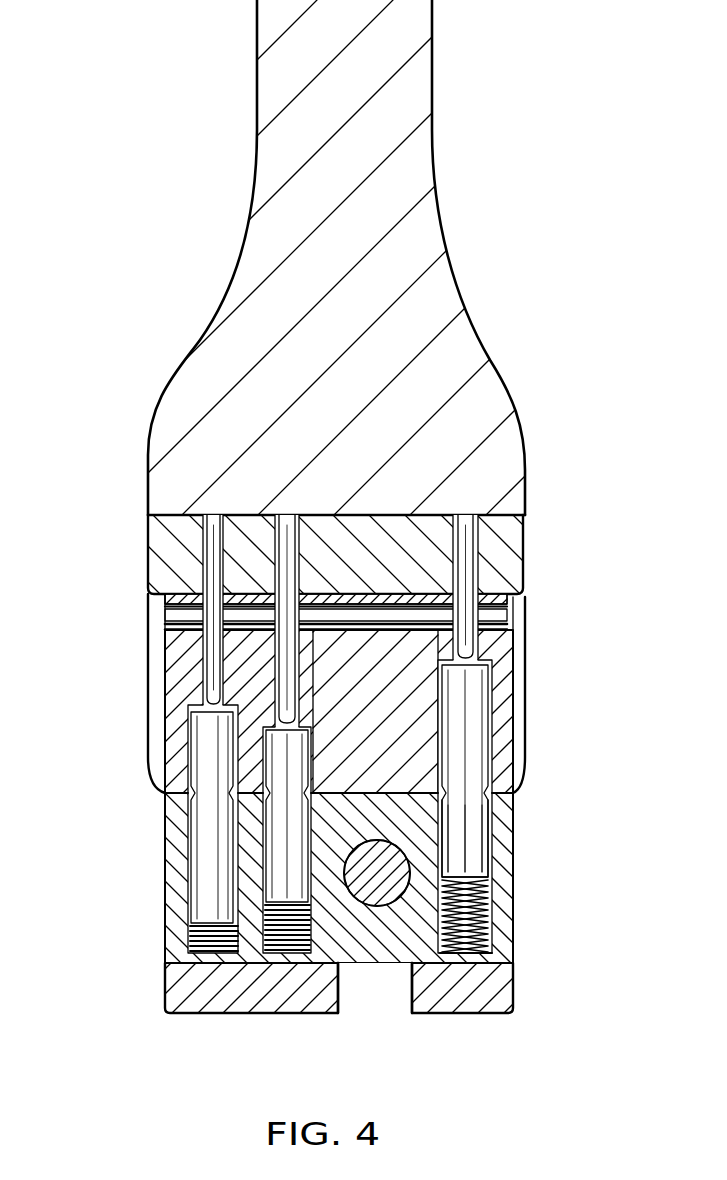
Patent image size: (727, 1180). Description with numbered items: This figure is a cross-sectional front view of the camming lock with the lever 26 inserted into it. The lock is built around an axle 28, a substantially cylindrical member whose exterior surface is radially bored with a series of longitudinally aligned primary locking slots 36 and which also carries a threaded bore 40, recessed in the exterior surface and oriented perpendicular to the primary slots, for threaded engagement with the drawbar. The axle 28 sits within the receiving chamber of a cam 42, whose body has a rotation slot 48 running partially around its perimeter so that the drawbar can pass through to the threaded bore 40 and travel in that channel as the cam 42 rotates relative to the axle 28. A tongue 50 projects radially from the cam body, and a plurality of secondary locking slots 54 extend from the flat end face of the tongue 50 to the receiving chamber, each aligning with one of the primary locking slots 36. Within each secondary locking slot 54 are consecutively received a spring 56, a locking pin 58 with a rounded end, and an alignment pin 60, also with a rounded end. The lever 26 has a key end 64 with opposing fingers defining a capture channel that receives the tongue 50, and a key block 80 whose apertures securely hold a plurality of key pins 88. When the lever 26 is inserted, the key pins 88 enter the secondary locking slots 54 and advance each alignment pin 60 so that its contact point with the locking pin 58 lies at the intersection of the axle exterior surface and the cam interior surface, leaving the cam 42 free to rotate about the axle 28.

The lever 26 is at (393, 115).
The axle 28 is at (177, 898).
The primary locking slots 36 is at (483, 930).
The threaded bore 40 is at (383, 895).
The cam 42 is at (502, 750).
The rotation slot 48 is at (355, 980).
The tongue 50 is at (173, 708).
The secondary locking slots 54 is at (482, 657).
The spring 56 is at (490, 905).
The locking pin 58 is at (463, 838).
The alignment pin 60 is at (467, 718).
The key end 64 is at (157, 663).
The key block 80 is at (173, 545).
The key pins 88 is at (463, 575).